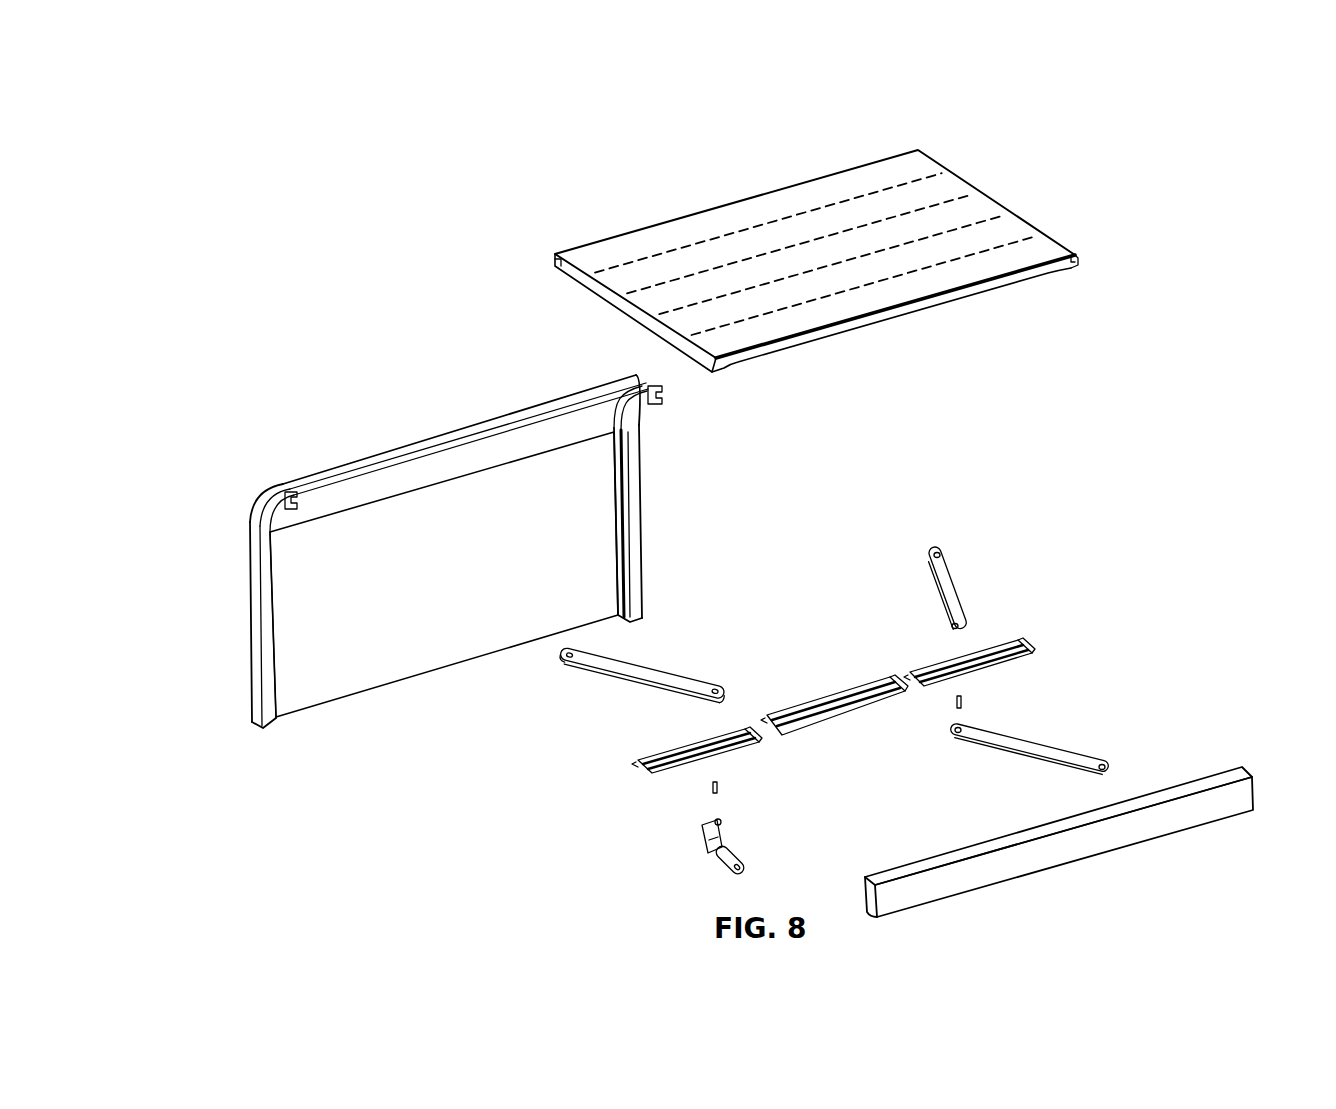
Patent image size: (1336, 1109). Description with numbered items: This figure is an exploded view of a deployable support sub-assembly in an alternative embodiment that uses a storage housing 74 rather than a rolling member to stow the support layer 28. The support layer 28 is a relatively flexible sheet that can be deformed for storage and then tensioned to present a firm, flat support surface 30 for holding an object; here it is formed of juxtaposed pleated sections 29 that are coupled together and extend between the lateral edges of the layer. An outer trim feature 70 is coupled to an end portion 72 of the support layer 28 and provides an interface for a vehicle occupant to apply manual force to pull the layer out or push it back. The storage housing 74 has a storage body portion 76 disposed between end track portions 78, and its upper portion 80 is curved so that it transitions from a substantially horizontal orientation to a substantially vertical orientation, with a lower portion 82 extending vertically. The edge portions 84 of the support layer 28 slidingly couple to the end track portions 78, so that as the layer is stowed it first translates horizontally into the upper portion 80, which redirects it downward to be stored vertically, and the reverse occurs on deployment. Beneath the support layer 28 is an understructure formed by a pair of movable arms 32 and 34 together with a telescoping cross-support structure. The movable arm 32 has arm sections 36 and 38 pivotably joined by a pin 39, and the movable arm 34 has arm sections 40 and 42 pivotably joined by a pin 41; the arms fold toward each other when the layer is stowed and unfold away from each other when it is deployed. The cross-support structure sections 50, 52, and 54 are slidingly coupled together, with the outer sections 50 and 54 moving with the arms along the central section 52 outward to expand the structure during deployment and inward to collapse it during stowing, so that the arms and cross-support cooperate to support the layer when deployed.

The support layer 28 is at (1030, 222).
The pleated sections 29 is at (865, 223).
The support surface 30 is at (982, 208).
The movable arm 32 is at (622, 668).
The movable arm 34 is at (952, 587).
The arm section 36 is at (668, 680).
The arm section 38 is at (710, 830).
The pin 39 is at (722, 788).
The arm section 40 is at (940, 554).
The pin 41 is at (967, 700).
The arm section 42 is at (1030, 740).
The cross-support structure section 50 is at (683, 752).
The cross-support structure section 52 is at (818, 700).
The cross-support structure section 54 is at (1012, 645).
The outer trim feature 70 is at (1262, 785).
The end portion 72 is at (985, 287).
The storage housing 74 is at (248, 618).
The storage body portion 76 is at (393, 452).
The end track portions 78 is at (270, 503).
The upper portion 80 is at (467, 422).
The lower portion 82 is at (425, 633).
The edge portions 84 is at (552, 262).